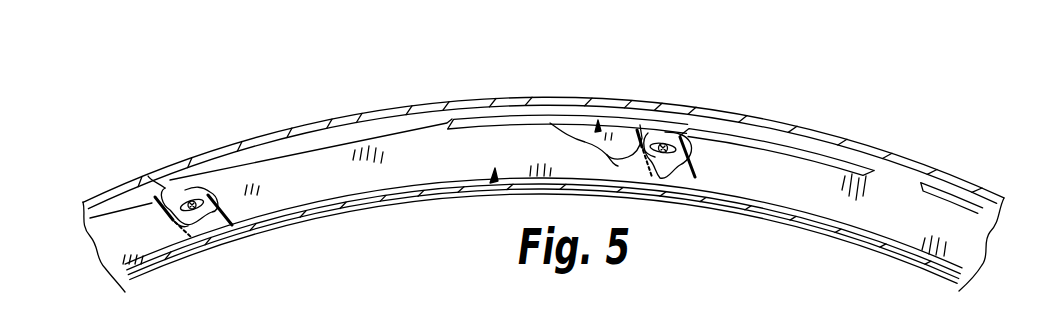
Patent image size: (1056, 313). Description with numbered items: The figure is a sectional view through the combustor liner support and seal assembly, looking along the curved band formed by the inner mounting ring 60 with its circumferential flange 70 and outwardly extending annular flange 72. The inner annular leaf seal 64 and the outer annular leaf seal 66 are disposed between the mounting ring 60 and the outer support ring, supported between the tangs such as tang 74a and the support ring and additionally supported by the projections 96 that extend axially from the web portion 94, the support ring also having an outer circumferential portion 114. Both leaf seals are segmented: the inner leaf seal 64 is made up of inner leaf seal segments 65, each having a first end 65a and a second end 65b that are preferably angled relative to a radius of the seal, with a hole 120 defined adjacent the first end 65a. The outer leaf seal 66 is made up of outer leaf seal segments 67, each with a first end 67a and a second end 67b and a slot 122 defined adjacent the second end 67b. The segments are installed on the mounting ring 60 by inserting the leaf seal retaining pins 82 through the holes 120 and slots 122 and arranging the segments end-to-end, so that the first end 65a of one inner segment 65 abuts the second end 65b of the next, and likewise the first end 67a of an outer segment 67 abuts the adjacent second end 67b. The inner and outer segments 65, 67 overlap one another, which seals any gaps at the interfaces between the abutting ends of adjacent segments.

The inner mounting ring 60 is at (50, 6).
The tang 74a is at (926, 6).
The inner annular leaf seal 64 is at (598, 122).
The inner leaf seal segment 65 is at (198, 188).
The first end 65a is at (165, 192).
The second end 65b is at (175, 190).
The outer annular leaf seal 66 is at (494, 180).
The outer leaf seal segment 67 is at (134, 283).
The first end 67a is at (248, 230).
The second end 67b is at (265, 233).
The circumferential flange 70 is at (353, 210).
The annular flange 72 is at (386, 193).
The leaf seal retaining pin 82 is at (200, 238).
The web portion 94 is at (459, 113).
The projection 96 is at (86, 200).
The outer circumferential portion 114 is at (300, 120).
The hole 120 is at (192, 200).
The slot 122 is at (724, 115).